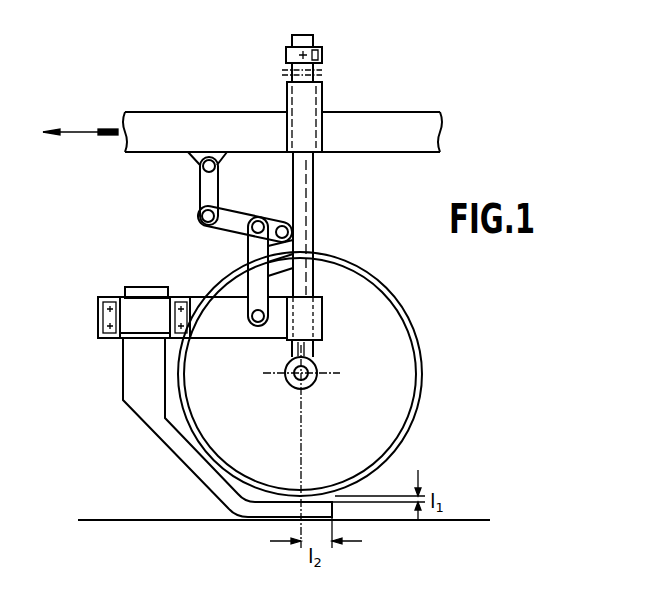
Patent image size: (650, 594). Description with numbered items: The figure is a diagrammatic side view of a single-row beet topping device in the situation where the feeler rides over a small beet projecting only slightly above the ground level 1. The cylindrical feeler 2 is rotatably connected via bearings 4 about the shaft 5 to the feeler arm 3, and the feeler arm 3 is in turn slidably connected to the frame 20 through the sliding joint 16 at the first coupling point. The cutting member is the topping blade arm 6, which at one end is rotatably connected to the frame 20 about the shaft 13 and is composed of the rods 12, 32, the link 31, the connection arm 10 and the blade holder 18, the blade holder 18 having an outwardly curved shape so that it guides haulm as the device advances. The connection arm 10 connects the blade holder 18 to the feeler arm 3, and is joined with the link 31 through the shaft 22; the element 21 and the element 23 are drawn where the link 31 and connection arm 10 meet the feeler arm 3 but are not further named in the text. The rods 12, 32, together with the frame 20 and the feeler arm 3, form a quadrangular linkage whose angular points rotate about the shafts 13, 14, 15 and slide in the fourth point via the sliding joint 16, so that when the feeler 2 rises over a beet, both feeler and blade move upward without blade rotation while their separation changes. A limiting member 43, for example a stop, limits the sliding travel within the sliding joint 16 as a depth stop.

The ground level 1 is at (122, 518).
The feeler 2 is at (393, 344).
The feeler arm 3 is at (313, 182).
The bearings 4 is at (288, 386).
The shaft 5 is at (313, 386).
The topping blade arm 6 is at (182, 254).
The connection arm 10 is at (112, 294).
The rod 12 is at (205, 190).
The shaft 13 is at (209, 159).
The shaft 14 is at (201, 217).
The shaft 15 is at (292, 231).
The sliding joint 16 is at (322, 126).
The blade holder 18 is at (153, 413).
The frame 20 is at (155, 120).
The pivot 21 is at (250, 230).
The shaft 22 is at (255, 323).
The slide block 23 is at (322, 320).
The link 31 is at (270, 281).
The rod 32 is at (234, 213).
The limiting member 43 is at (322, 53).